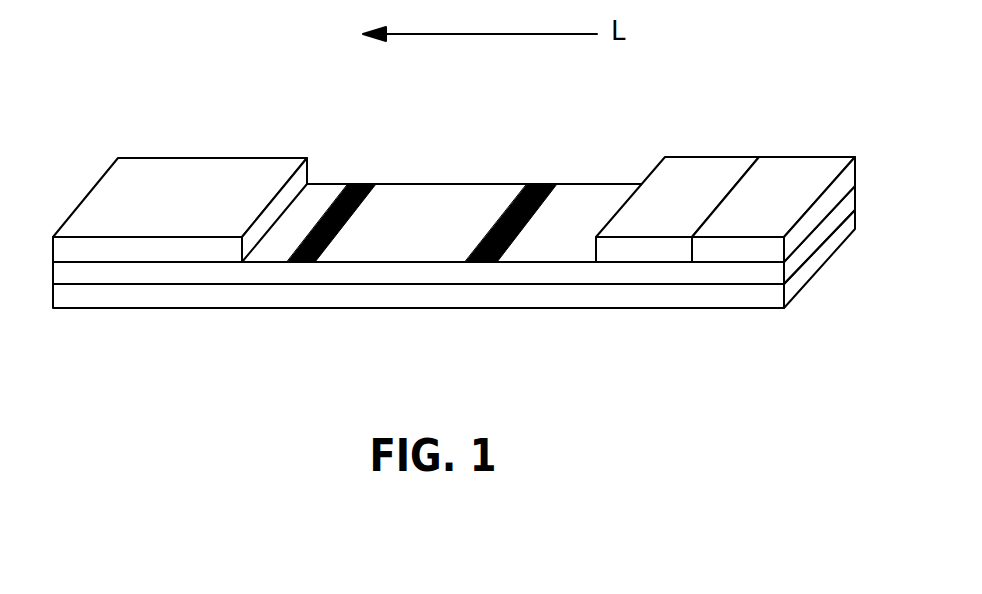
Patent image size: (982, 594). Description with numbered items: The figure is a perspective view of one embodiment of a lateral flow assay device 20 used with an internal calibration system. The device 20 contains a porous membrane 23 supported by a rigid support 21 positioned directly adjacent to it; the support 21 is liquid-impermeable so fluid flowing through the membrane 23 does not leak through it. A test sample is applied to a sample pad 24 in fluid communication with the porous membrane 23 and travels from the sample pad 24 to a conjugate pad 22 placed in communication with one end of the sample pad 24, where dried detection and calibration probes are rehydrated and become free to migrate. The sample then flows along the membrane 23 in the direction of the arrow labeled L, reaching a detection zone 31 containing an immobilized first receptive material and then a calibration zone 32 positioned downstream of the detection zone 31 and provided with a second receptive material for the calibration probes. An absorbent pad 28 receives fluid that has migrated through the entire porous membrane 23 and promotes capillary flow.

The lateral flow assay device 20 is at (102, 92).
The support 21 is at (190, 300).
The conjugate pad 22 is at (682, 172).
The porous membrane 23 is at (579, 276).
The sample pad 24 is at (776, 170).
The absorbent pad 28 is at (173, 170).
The detection zone 31 is at (545, 182).
The calibration zone 32 is at (365, 183).